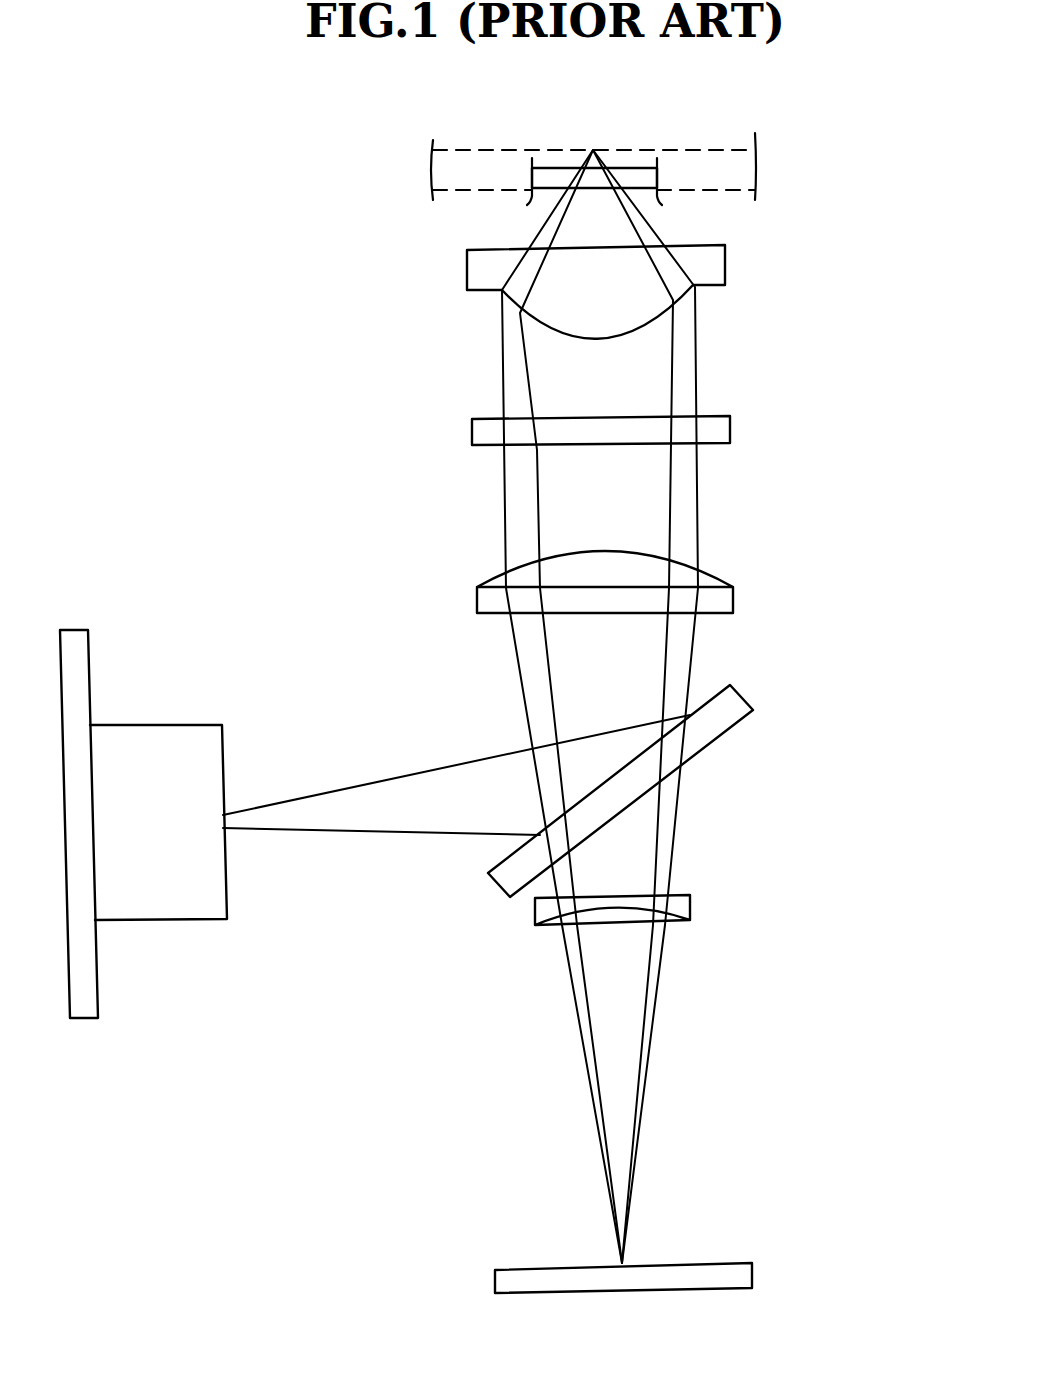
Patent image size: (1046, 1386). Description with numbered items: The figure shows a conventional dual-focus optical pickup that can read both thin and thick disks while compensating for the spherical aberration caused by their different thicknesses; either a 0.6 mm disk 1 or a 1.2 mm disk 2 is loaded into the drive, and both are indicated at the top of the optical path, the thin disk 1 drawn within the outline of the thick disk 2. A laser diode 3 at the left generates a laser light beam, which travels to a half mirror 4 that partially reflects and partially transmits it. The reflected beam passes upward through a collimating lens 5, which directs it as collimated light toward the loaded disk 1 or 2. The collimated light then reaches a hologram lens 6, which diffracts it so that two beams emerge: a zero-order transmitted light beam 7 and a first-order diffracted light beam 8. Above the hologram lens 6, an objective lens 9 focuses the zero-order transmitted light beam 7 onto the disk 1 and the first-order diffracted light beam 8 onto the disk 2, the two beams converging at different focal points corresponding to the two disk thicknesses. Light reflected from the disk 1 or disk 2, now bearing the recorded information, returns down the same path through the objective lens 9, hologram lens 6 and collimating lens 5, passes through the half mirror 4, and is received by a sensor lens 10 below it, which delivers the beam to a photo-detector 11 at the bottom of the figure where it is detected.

The 0.6 mm disk 1 is at (635, 180).
The 1.2 mm disk 2 is at (486, 167).
The laser diode 3 is at (195, 743).
The half mirror 4 is at (730, 713).
The collimating lens 5 is at (710, 597).
The hologram lens 6 is at (703, 427).
The zero-order transmitted light beam 7 is at (502, 348).
The 1st-order diffracted light beam 8 is at (527, 373).
The objective lens 9 is at (707, 263).
The sensor lens 10 is at (685, 907).
The photo-detector 11 is at (730, 1277).